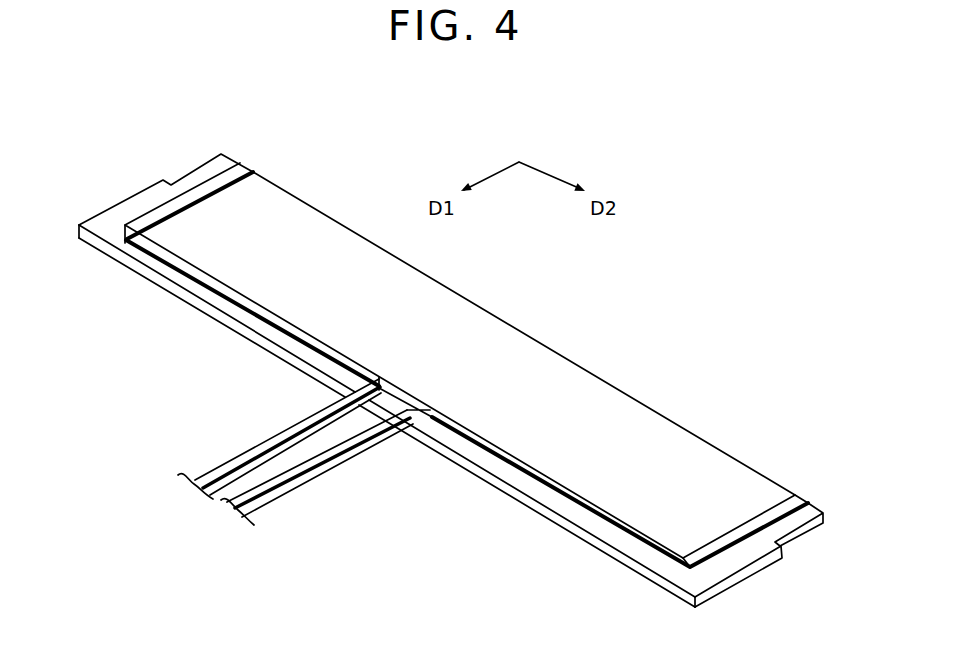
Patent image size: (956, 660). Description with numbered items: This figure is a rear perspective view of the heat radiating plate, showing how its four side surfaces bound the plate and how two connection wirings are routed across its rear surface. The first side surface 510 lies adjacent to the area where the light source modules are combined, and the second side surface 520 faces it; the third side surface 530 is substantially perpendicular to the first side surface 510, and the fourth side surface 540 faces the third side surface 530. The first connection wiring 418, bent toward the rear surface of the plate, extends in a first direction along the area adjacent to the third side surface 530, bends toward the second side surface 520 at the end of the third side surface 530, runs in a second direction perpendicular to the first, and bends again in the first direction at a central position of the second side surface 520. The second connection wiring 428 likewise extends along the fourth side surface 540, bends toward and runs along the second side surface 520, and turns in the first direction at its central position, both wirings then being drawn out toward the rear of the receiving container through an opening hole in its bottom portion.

The first side surface 510 is at (560, 352).
The second side surface 520 is at (548, 526).
The third side surface 530 is at (123, 197).
The fourth side surface 540 is at (740, 582).
The first connection wiring 418 is at (242, 461).
The second connection wiring 428 is at (286, 487).